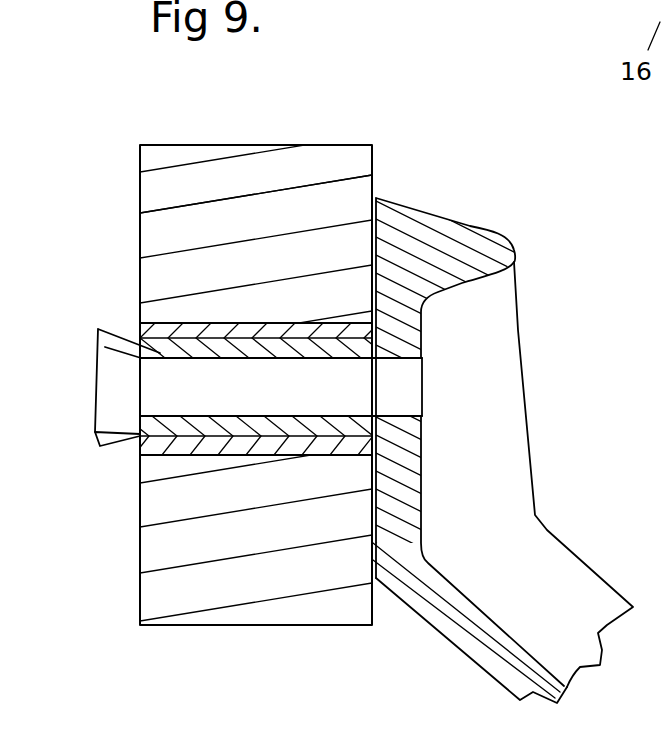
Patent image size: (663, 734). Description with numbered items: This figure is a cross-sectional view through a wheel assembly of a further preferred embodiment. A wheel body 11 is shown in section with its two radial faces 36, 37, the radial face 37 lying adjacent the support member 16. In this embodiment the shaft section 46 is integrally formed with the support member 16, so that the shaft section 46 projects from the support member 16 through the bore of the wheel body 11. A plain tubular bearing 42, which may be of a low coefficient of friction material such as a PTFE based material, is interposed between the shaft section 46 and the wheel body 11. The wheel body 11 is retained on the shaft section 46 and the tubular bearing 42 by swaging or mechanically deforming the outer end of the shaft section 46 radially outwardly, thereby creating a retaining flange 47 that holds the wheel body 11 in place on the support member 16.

The wheel body 11 is at (275, 173).
The radial face 36 is at (140, 252).
The radial face 37 is at (376, 170).
The tubular bearing 42 is at (190, 445).
The shaft section 46 is at (183, 358).
The retaining flange 47 is at (102, 441).
The support member 16 is at (473, 448).